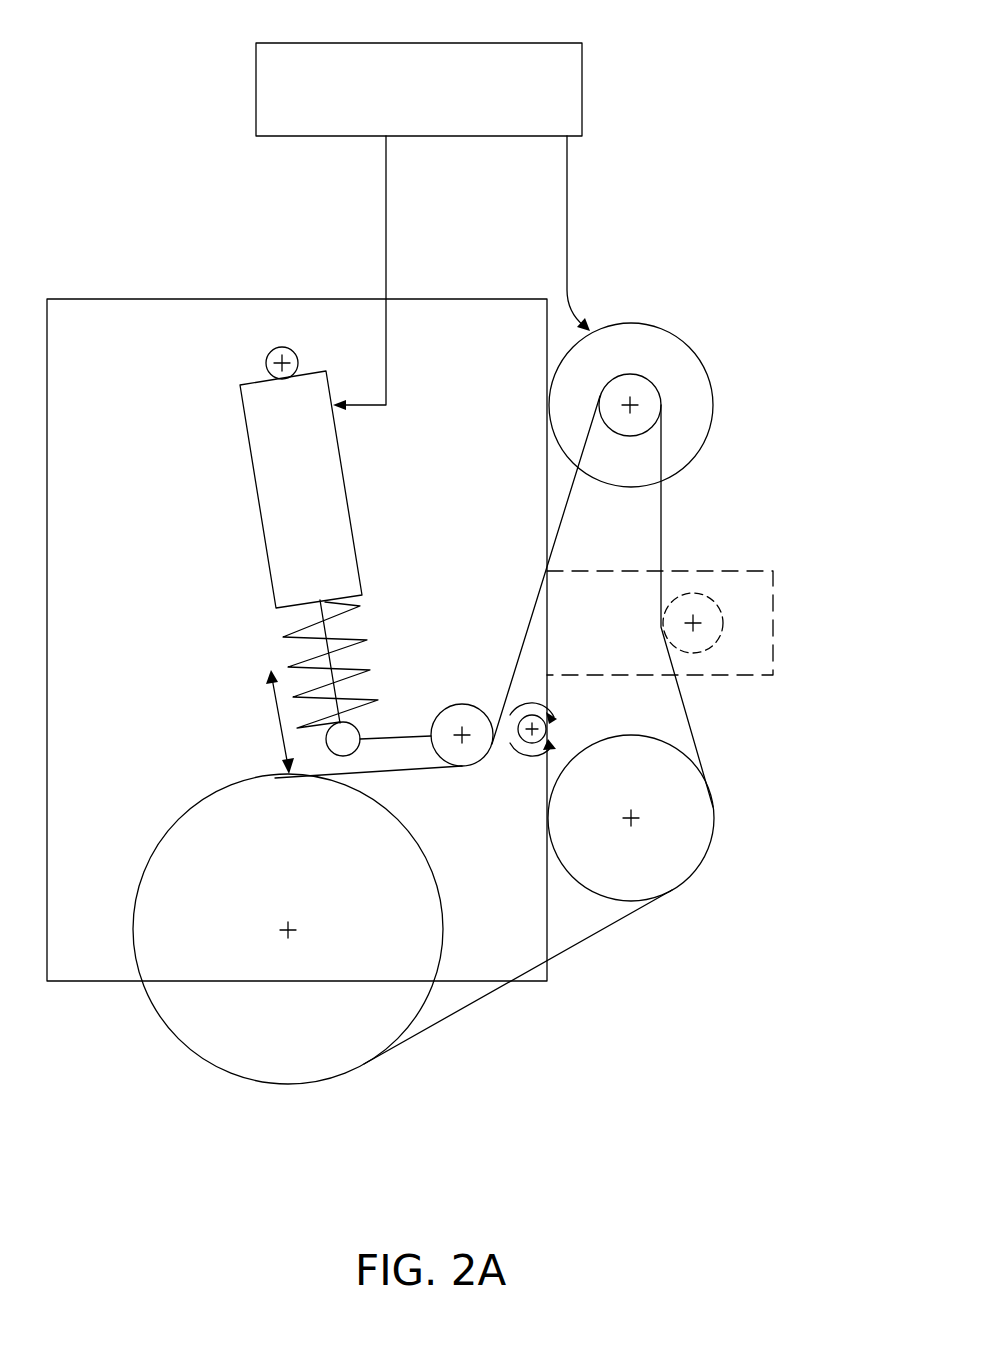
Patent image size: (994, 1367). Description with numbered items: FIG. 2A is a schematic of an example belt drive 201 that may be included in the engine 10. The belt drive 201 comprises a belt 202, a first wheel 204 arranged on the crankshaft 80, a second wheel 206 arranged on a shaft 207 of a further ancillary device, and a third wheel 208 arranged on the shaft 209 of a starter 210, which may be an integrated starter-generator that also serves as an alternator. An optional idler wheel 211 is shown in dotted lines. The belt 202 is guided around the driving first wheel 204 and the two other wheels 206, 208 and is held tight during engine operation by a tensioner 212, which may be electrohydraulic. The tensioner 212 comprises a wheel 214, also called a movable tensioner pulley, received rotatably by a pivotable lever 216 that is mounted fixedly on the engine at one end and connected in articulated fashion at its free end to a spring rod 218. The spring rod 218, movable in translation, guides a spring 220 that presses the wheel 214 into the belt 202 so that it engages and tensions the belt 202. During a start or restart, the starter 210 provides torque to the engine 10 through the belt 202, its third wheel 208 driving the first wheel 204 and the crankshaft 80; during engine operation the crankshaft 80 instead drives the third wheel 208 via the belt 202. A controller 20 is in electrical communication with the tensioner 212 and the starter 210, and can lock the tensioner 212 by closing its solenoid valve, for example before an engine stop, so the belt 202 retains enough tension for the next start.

The controller 20 is at (258, 45).
The engine 10 is at (175, 298).
The tensioner 212 is at (288, 562).
The spring 220 is at (355, 625).
The spring rod 218 is at (292, 622).
The wheel 214 is at (466, 750).
The pivotable lever 216 is at (400, 722).
The belt drive 201 is at (607, 653).
The starter 210 is at (615, 295).
The shaft 209 is at (636, 400).
The third wheel 208 is at (650, 410).
The idler wheel 211 is at (713, 608).
The second wheel 206 is at (680, 862).
The shaft 207 is at (630, 826).
The belt 202 is at (538, 605).
The first wheel 204 is at (207, 1065).
The crankshaft 80 is at (292, 935).